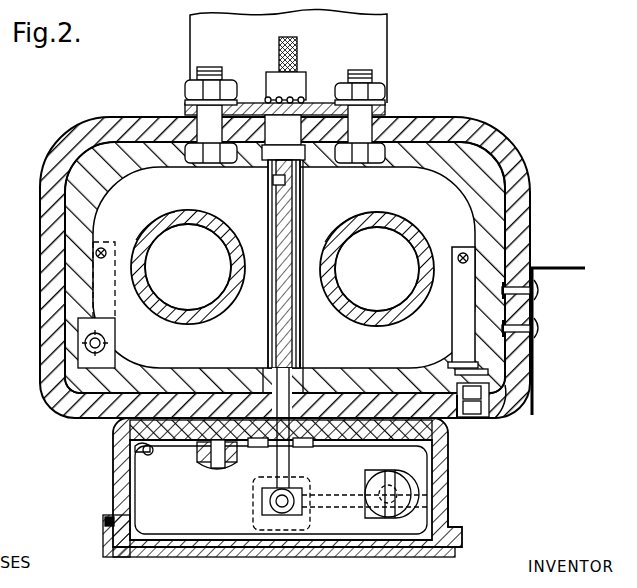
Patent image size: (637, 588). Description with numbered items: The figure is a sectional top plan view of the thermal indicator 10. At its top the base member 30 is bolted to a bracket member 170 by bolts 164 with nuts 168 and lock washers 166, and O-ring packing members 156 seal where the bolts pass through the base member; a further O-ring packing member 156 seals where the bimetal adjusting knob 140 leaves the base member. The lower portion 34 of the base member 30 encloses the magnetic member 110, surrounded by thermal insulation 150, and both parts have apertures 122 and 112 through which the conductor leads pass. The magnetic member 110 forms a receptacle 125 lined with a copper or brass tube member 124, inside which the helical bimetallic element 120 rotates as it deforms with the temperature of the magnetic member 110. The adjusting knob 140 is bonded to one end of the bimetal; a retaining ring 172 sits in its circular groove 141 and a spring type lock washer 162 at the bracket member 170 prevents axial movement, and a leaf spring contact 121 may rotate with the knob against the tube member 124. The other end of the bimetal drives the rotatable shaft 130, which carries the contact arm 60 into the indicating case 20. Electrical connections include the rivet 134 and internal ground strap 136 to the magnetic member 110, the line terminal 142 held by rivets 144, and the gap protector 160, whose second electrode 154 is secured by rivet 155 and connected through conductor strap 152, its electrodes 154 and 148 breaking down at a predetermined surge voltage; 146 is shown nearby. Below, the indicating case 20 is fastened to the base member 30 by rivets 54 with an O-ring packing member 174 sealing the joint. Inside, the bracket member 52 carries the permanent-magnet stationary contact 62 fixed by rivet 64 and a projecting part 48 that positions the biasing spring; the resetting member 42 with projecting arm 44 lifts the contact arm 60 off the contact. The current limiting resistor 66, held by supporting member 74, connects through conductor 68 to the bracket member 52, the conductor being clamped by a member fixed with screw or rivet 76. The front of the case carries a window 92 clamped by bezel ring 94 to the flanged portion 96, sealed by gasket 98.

The thermal indicator 10 is at (507, 516).
The indicating case 20 is at (96, 488).
The base member 30 is at (26, 368).
The lower portion 34 is at (526, 188).
The resetting member 42 is at (258, 530).
The projecting arm 44 is at (334, 496).
The projecting part 48 is at (262, 494).
The bracket member 52 is at (355, 472).
The rivets 54 is at (280, 453).
The contact arm 60 is at (362, 512).
The stationary contact 62 is at (380, 505).
The rivet 64 is at (200, 464).
The current limiting resistor 66 is at (148, 455).
The conductor 68 is at (197, 455).
The supporting member 74 is at (134, 448).
The screw or rivet 76 is at (226, 468).
The window 92 is at (175, 556).
The bezel ring 94 is at (104, 540).
The flanged portion 96 is at (104, 526).
The gasket 98 is at (118, 557).
The magnetic member 110 is at (190, 205).
The apertures 112 is at (236, 266).
The bimetallic element 120 is at (303, 210).
The leaf spring contact 121 is at (270, 182).
The apertures 122 is at (183, 310).
The tube member 124 is at (268, 200).
The receptacle 125 is at (303, 333).
The rotatable shaft 130 is at (318, 372).
The rivet 134 is at (96, 353).
The internal ground strap 136 is at (104, 320).
The bimetal adjusting knob 140 is at (297, 50).
The circular groove 141 is at (283, 137).
The line terminal 142 is at (535, 357).
The rivets 144 is at (536, 304).
The lower bracket 146 is at (457, 418).
The electrode 148 is at (482, 408).
The thermal insulation 150 is at (126, 183).
The conductor strap 152 is at (455, 318).
The second electrode 154 is at (482, 393).
The rivet 155 is at (488, 374).
The O-ring packing members 156 is at (188, 118).
The gap protector 160 is at (525, 443).
The spring type lock washer 162 is at (262, 98).
The bolts 164 is at (212, 68).
The lock washers 166 is at (188, 103).
The nuts 168 is at (188, 88).
The bracket member 170 is at (388, 31).
The retaining ring 172 is at (312, 174).
The O-ring packing member 174 is at (225, 372).